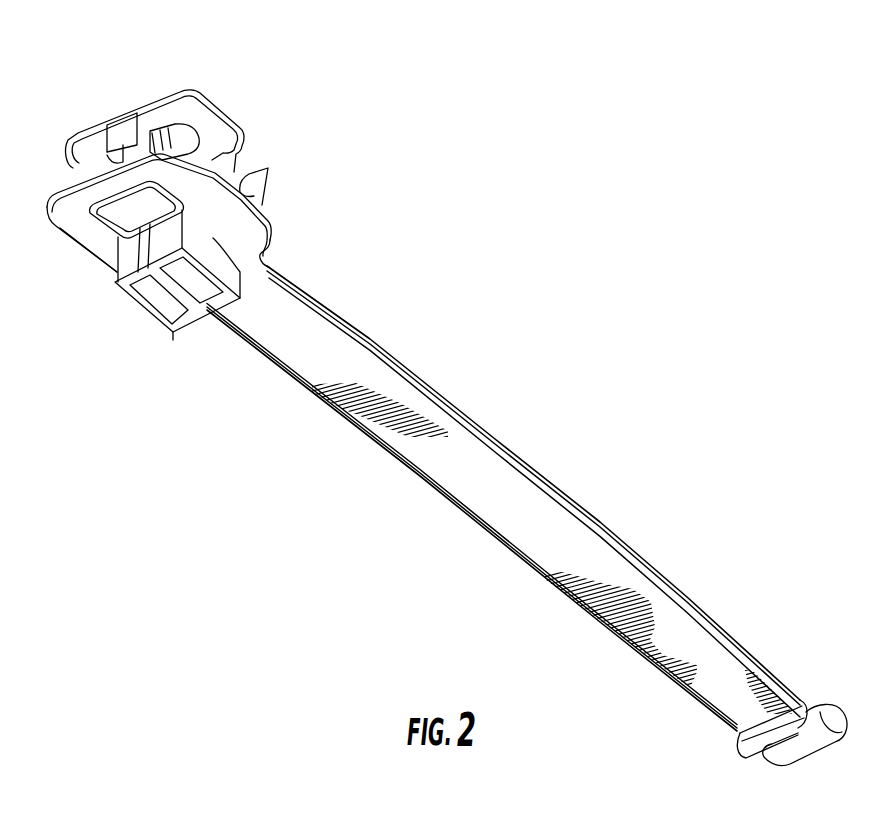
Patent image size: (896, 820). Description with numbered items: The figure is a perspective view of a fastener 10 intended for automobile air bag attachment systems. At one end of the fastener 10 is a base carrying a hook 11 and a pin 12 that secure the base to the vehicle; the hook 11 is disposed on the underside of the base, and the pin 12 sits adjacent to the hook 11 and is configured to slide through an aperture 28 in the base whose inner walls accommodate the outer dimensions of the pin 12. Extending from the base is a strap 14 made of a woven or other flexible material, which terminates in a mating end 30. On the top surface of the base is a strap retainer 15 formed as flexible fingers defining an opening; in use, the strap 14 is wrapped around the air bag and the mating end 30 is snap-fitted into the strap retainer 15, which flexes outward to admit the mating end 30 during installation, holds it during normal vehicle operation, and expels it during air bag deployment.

The fastener 10 is at (518, 436).
The hook 11 is at (170, 333).
The pin 12 is at (207, 135).
The strap 14 is at (678, 632).
The strap retainer 15 is at (268, 169).
The aperture 28 is at (75, 222).
The mating end 30 is at (835, 725).